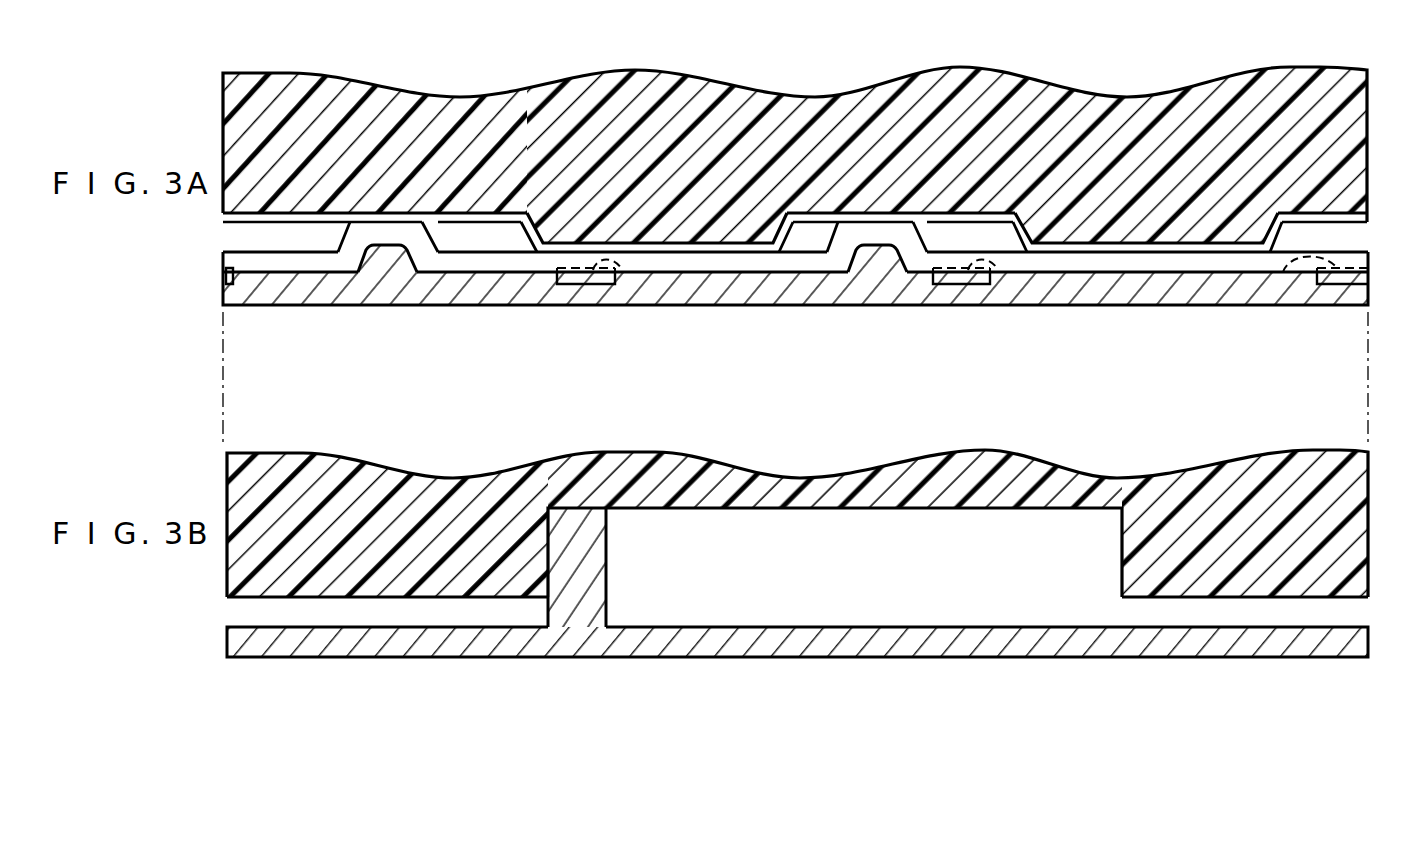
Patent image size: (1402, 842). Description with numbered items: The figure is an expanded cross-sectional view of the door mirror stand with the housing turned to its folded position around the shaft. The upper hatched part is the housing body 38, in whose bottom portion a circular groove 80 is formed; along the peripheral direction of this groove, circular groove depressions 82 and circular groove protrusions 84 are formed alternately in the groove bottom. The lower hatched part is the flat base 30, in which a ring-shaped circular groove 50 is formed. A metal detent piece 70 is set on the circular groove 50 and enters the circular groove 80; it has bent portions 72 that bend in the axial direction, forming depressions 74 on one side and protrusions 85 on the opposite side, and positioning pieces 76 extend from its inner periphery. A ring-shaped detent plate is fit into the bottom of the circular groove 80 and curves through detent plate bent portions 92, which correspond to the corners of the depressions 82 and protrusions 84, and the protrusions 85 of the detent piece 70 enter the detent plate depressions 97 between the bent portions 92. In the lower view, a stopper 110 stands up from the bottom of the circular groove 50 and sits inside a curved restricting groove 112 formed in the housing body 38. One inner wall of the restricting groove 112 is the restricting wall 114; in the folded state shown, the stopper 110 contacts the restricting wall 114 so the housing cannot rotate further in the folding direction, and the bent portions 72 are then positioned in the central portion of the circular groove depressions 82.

In FIG. 3A, the housing body 38 is at (1155, 97).
In FIG. 3B, the housing body 38 is at (413, 485).
In FIG. 3A, the base 30 is at (1050, 303).
In FIG. 3B, the base 30 is at (800, 657).
In FIG. 3A, the detent plate bent portions 92 is at (540, 212).
In FIG. 3A, the protrusions 85 is at (388, 221).
In FIG. 3A, the bent portions 72 is at (340, 240).
In FIG. 3A, the circular groove protrusions 84 is at (693, 254).
In FIG. 3A, the circular groove 80 is at (512, 224).
In FIG. 3A, the circular groove 50 is at (1178, 258).
In FIG. 3A, the depressions 74 is at (377, 247).
In FIG. 3A, the detent piece 70 is at (474, 272).
In FIG. 3A, the circular groove depressions 82 is at (298, 215).
In FIG. 3A, the positioning pieces 76 is at (603, 270).
In FIG. 3A, the detent plate depressions 97 is at (483, 225).
In FIG. 3B, the restricting groove 112 is at (795, 508).
In FIG. 3B, the stopper 110 is at (607, 585).
In FIG. 3B, the restricting wall 114 is at (551, 543).